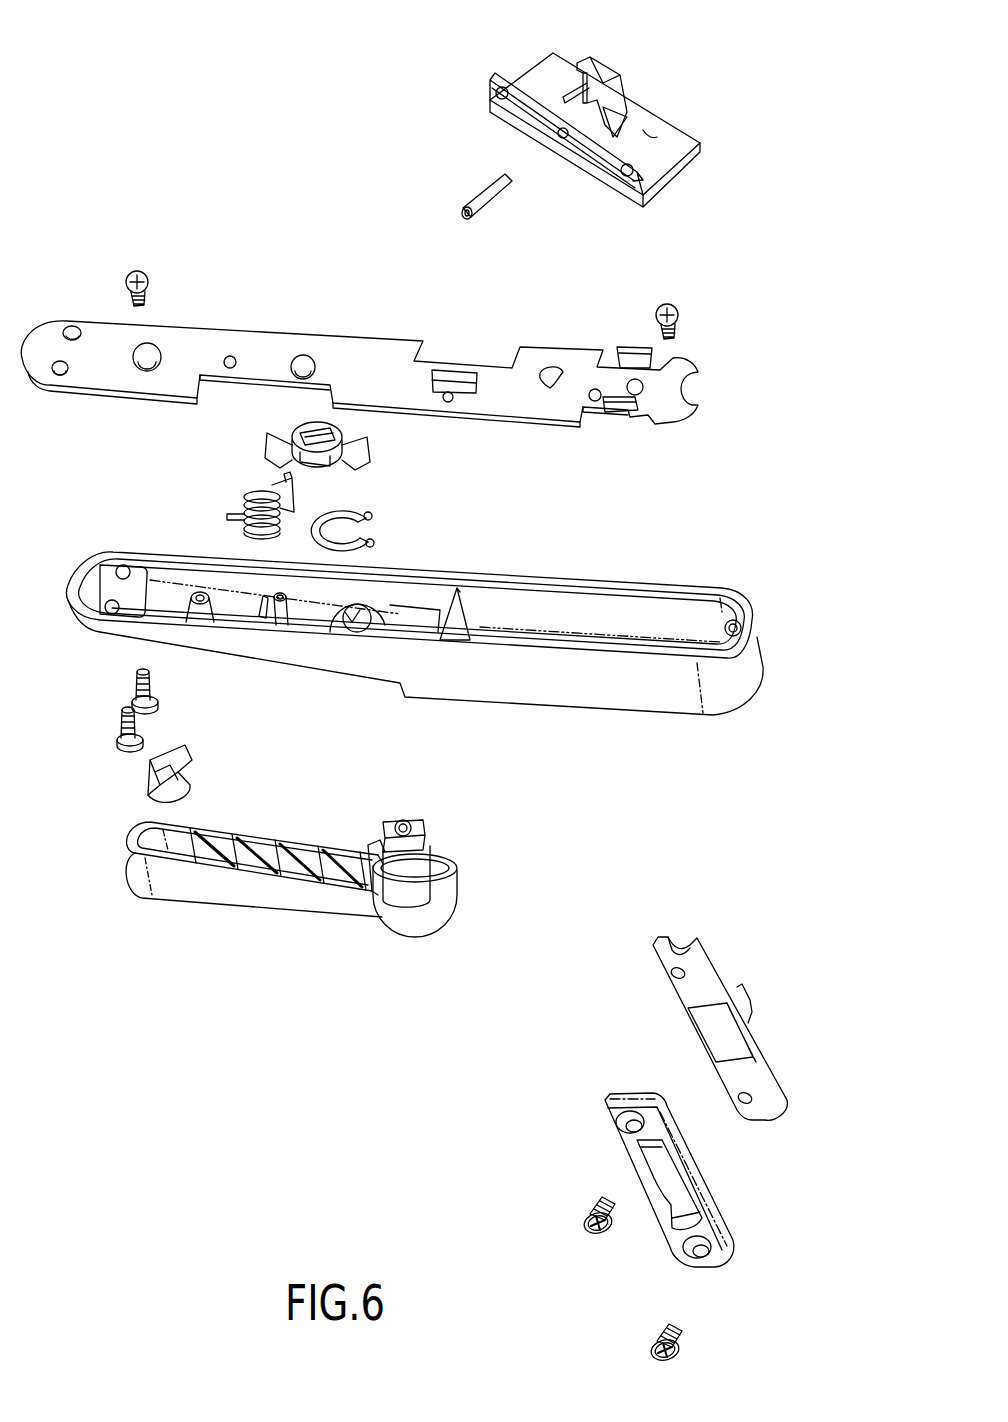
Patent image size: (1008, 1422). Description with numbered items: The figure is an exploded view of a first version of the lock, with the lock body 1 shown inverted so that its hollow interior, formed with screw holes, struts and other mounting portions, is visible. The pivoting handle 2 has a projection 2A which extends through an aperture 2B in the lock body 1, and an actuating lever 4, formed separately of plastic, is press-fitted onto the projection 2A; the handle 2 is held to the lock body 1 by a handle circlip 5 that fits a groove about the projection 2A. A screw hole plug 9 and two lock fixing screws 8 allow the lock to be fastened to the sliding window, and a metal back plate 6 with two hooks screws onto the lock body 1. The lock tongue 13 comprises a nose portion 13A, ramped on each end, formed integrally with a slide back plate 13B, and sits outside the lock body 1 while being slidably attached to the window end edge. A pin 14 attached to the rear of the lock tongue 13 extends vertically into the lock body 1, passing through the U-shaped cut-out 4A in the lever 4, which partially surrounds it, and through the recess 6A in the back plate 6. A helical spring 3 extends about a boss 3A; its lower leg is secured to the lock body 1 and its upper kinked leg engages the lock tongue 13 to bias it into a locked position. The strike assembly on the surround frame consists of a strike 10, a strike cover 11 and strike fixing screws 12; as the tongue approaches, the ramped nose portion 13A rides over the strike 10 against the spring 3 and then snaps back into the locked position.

The lock body 1 is at (157, 293).
The pivoting handle 2 is at (233, 915).
The projection 2A is at (434, 813).
The aperture 2B is at (358, 628).
The spring 3 is at (233, 500).
The boss 3A is at (282, 622).
The actuating lever 4 is at (260, 453).
The U-shaped cut-out 4A is at (315, 470).
The handle circlip 5 is at (393, 525).
The back plate 6 is at (503, 422).
The recess 6A is at (472, 353).
The lock fixing screws 8 is at (125, 697).
The screw hole plug 9 is at (198, 778).
The strike 10 is at (657, 987).
The strike cover 11 is at (718, 1180).
The strike fixing screws 12 is at (568, 1208).
The lock tongue 13 is at (619, 103).
The nose portion 13A is at (618, 143).
The slide back plate 13B is at (542, 86).
The pin 14 is at (472, 183).